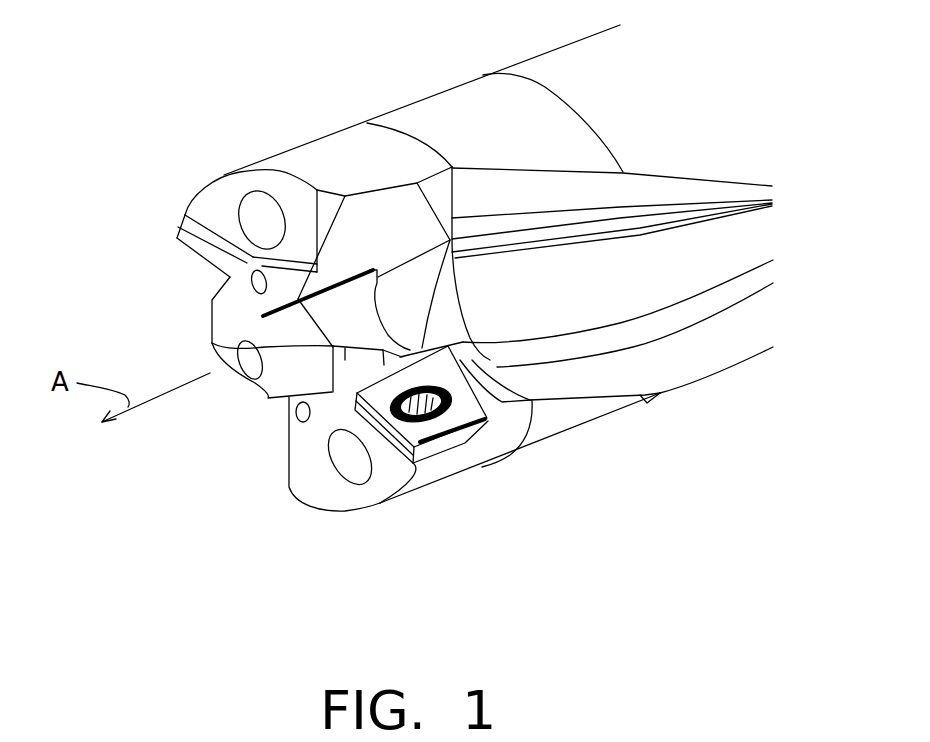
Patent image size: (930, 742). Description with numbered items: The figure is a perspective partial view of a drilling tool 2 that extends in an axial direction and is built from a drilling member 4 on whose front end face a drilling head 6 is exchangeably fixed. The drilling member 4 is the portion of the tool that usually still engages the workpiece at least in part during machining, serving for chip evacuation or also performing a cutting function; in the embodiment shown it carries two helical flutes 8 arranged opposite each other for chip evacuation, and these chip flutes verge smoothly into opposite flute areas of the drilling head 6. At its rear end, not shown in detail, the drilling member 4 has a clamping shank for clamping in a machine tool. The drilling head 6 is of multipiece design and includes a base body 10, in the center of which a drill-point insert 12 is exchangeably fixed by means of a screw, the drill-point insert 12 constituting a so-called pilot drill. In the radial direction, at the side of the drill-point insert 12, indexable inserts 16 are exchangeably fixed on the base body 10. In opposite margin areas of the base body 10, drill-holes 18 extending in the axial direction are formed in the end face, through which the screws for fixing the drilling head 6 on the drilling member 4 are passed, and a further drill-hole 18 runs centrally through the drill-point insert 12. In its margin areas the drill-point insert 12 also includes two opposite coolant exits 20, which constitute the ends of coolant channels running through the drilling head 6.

The drilling tool 2 is at (705, 440).
The drilling member 4 is at (577, 83).
The drilling head 6 is at (323, 153).
The helical flutes 8 is at (677, 275).
The base body 10 is at (223, 200).
The drill-point insert 12 is at (290, 378).
The indexable inserts 16 is at (203, 257).
The drill-holes 18 is at (263, 215).
The coolant exits 20 is at (252, 279).